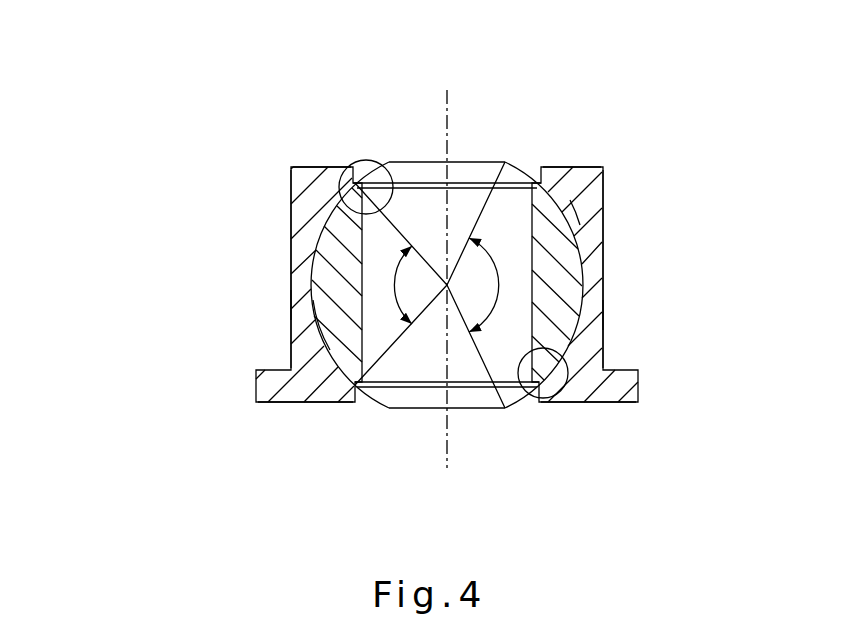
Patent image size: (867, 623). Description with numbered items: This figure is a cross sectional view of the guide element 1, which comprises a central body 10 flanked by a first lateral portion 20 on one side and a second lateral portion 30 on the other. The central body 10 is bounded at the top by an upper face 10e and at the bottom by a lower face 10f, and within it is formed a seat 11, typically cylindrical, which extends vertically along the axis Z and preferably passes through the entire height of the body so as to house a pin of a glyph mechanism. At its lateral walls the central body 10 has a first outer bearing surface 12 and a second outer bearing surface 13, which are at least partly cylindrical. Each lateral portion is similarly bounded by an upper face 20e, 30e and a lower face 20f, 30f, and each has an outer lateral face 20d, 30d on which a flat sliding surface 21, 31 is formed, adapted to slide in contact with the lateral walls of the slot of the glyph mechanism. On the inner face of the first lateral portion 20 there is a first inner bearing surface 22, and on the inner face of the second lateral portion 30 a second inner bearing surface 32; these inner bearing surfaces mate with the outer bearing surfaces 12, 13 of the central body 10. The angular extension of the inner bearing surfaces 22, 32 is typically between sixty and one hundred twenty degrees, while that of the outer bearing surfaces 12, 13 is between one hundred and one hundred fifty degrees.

The guide element 1 is at (143, 117).
The central body 10 is at (378, 410).
The upper face 10e is at (491, 157).
The lower face 10f is at (405, 413).
The seat 11 is at (465, 362).
The first outer bearing surface 12 is at (327, 352).
The second outer bearing surface 13 is at (578, 210).
The first lateral portion 20 is at (285, 140).
The outer lateral face 20d is at (290, 305).
The upper face 20e is at (325, 157).
The lower face 20f is at (301, 410).
The flat sliding surface 21 is at (290, 235).
The first inner bearing surface 22 is at (388, 165).
The second lateral portion 30 is at (610, 140).
The outer lateral face 30d is at (607, 316).
The upper face 30e is at (572, 157).
The lower face 30f is at (585, 410).
The flat sliding surface 31 is at (605, 240).
The second inner bearing surface 32 is at (530, 396).